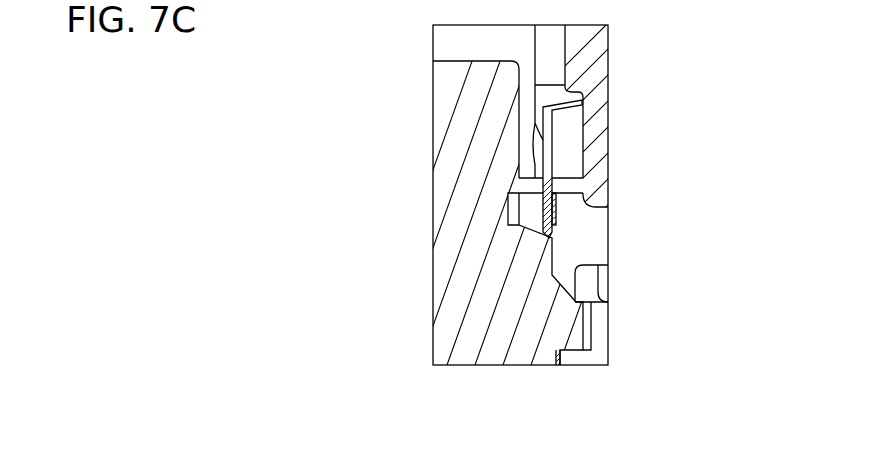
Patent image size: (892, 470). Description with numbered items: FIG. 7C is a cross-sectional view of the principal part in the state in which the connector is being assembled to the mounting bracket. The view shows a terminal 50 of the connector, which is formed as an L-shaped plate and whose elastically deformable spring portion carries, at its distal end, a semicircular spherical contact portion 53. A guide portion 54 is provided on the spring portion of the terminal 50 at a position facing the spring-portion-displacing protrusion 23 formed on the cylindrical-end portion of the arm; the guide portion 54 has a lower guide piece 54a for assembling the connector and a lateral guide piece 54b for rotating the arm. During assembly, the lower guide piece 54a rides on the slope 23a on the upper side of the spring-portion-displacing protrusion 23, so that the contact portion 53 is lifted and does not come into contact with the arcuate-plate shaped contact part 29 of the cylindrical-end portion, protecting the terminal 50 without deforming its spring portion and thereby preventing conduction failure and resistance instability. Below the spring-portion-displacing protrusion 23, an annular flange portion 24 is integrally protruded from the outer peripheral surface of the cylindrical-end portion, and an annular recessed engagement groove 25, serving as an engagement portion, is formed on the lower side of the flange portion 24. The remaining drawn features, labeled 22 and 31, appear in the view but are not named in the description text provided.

The terminal 50 is at (536, 107).
The contact portion 53 is at (533, 143).
The housing upper body 22 is at (519, 145).
The contact part 29 is at (530, 178).
The slope 23a is at (540, 240).
The spring-portion-displacing protrusion 23 is at (530, 242).
The guide portion 54 is at (590, 152).
The lateral guide piece 54b is at (585, 182).
The lower guide piece 54a is at (558, 205).
The recess 31 is at (600, 253).
The flange portion 24 is at (588, 325).
The engagement groove 25 is at (565, 357).